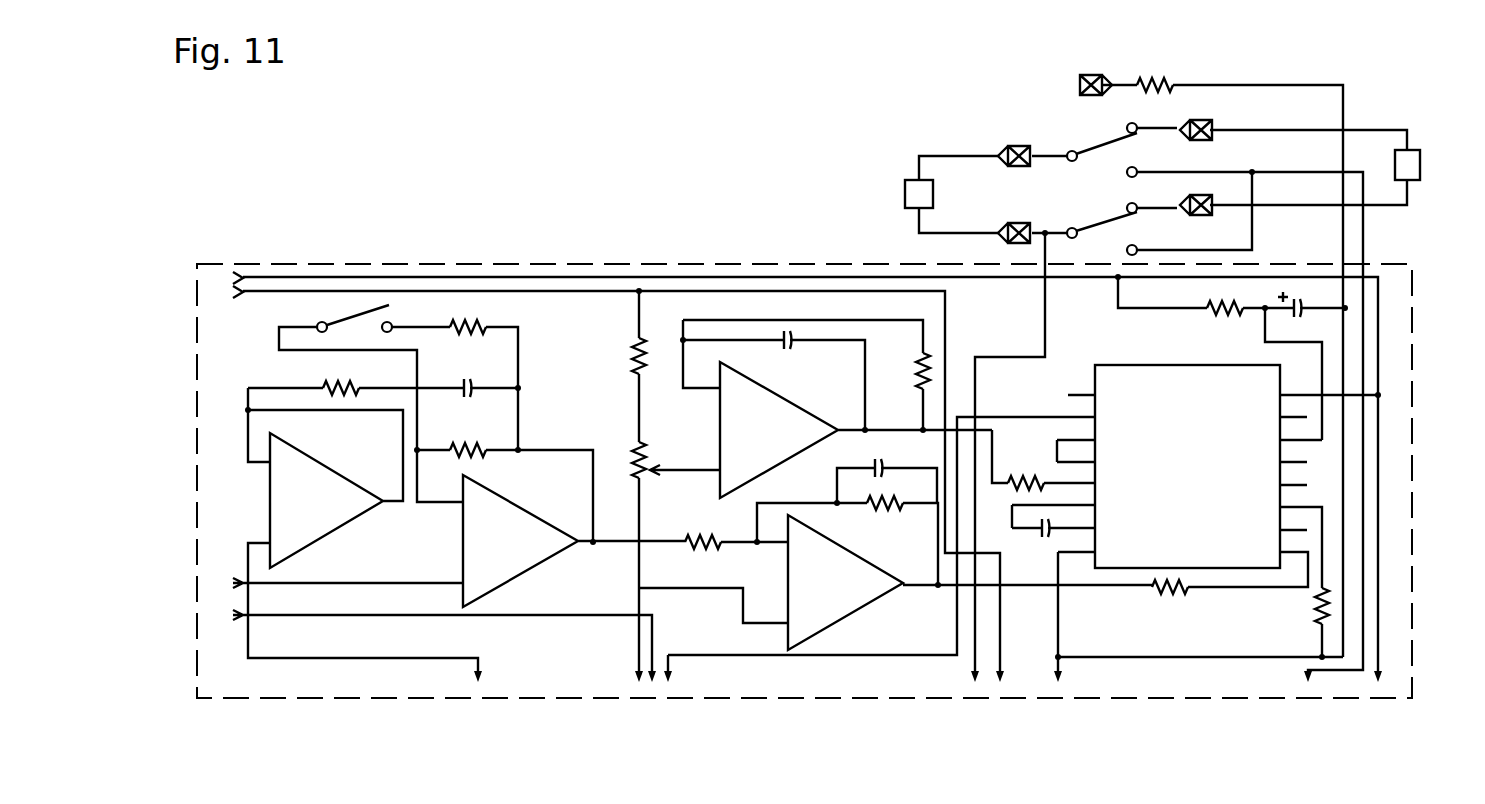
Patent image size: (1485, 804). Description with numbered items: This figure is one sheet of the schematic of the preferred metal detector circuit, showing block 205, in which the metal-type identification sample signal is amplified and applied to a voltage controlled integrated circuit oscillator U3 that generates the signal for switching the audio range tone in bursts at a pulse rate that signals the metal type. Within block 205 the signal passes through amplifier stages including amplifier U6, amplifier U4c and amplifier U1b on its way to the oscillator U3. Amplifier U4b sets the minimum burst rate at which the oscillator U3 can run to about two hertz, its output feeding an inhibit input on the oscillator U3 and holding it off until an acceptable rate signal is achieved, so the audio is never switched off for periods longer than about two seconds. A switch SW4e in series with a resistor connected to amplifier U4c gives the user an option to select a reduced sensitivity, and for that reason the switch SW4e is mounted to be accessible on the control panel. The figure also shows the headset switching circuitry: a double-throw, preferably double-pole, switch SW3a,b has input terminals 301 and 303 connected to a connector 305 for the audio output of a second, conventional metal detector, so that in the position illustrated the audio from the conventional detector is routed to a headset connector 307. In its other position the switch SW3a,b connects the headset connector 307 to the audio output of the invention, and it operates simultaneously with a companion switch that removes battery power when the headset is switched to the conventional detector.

The block 205 is at (335, 262).
The input terminal 301 is at (1196, 120).
The input terminal 303 is at (1197, 215).
The connector 305 is at (1420, 165).
The headset connector 307 is at (905, 186).
The double-throw switch SW3a,b is at (1191, 399).
The switch SW4e is at (367, 400).
The voltage controlled integrated circuit oscillator U3 is at (1196, 523).
The amplifier U6 is at (363, 535).
The amplifier U4b is at (837, 409).
The amplifier U4c is at (560, 541).
The amplifier U1b is at (895, 549).